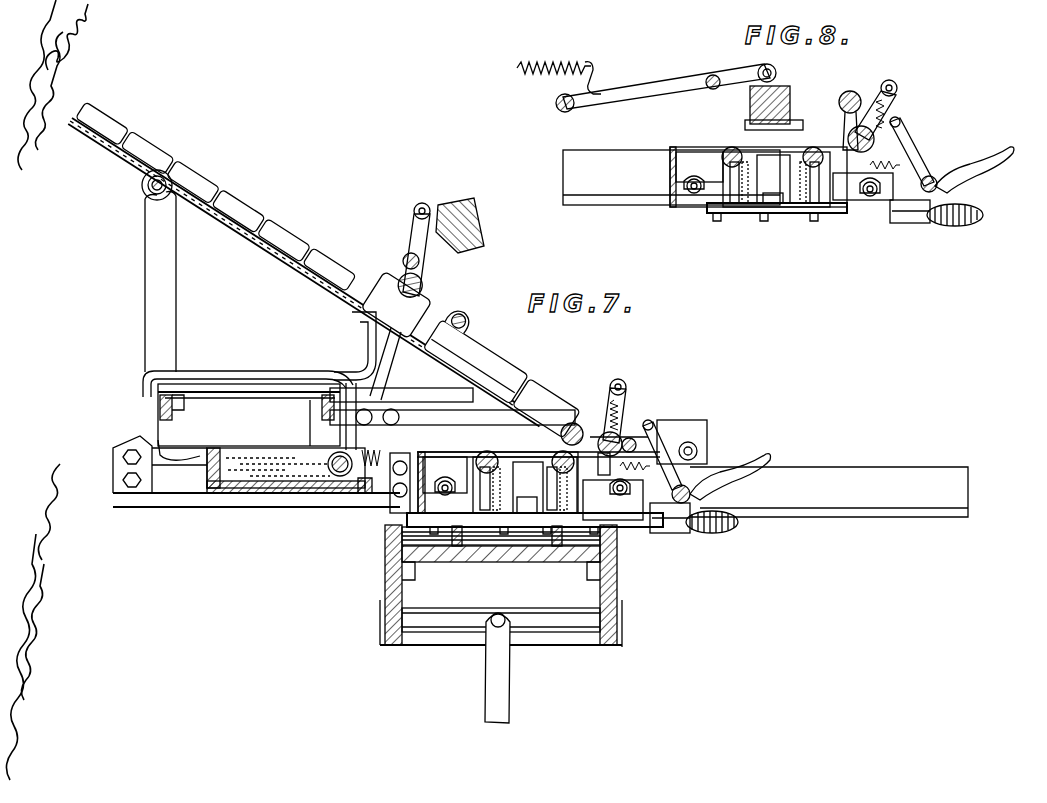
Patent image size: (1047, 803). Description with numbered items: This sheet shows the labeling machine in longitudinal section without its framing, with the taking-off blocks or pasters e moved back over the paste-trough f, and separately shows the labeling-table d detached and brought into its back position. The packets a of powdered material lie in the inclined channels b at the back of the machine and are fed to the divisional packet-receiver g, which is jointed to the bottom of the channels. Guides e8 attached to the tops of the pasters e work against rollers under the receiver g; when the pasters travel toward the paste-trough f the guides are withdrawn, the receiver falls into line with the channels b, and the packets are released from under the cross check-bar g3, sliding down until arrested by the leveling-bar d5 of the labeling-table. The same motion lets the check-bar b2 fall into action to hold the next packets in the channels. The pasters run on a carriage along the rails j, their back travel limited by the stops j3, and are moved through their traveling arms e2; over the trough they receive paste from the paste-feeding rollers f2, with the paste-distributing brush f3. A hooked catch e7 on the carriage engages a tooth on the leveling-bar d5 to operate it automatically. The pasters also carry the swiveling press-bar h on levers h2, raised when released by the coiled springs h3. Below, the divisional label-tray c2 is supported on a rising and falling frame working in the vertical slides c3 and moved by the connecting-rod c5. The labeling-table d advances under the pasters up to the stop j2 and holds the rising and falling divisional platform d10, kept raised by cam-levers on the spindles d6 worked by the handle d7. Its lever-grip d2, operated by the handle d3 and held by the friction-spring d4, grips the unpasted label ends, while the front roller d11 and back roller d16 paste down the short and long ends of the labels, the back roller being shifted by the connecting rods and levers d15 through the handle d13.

In FIG. 7, the packets a is at (560, 388).
In FIG. 7, the inclined channels b is at (232, 226).
In FIG. 7, the check-bar b2 is at (424, 284).
In FIG. 7, the divisional packet-receiver g is at (505, 376).
In FIG. 7, the cross check-bar g3 is at (462, 318).
In FIG. 7, the press-bar h is at (470, 236).
In FIG. 8, the press-bar h is at (777, 106).
In FIG. 8, the levers h2 is at (666, 86).
In FIG. 8, the coiled springs h3 is at (558, 64).
In FIG. 7, the taking-off blocks or pasters e is at (272, 408).
In FIG. 7, the traveling arms e2 is at (742, 424).
In FIG. 7, the hooked catch e7 is at (350, 384).
In FIG. 7, the guides e8 is at (258, 372).
In FIG. 7, the paste-trough f is at (284, 470).
In FIG. 7, the paste-feeding rollers f2 is at (332, 492).
In FIG. 7, the paste-distributing brush f3 is at (368, 492).
In FIG. 7, the rails j is at (829, 492).
In FIG. 8, the rails j is at (671, 177).
In FIG. 7, the stop j2 is at (400, 471).
In FIG. 7, the stops j3 is at (132, 456).
In FIG. 7, the labeling-table d is at (470, 448).
In FIG. 8, the labeling-table d is at (775, 172).
In FIG. 7, the lever-grip d2 is at (634, 437).
In FIG. 7, the handle d3 is at (625, 386).
In FIG. 8, the handle d3 is at (898, 85).
In FIG. 7, the friction-spring d4 is at (622, 408).
In FIG. 8, the friction-spring d4 is at (888, 112).
In FIG. 7, the leveling-bar d5 is at (576, 422).
In FIG. 8, the leveling-bar d5 is at (853, 98).
In FIG. 7, the spindles d6 is at (640, 522).
In FIG. 8, the spindles d6 is at (862, 214).
In FIG. 7, the handle d7 is at (723, 525).
In FIG. 8, the handle d7 is at (972, 213).
In FIG. 7, the rising and falling divisional platform d10 is at (512, 468).
In FIG. 8, the rising and falling divisional platform d10 is at (776, 167).
In FIG. 7, the front roller d11 is at (544, 482).
In FIG. 8, the front roller d11 is at (815, 146).
In FIG. 7, the handle d13 is at (772, 454).
In FIG. 8, the handle d13 is at (979, 170).
In FIG. 7, the connecting rods and levers d15 is at (662, 438).
In FIG. 8, the connecting rods and levers d15 is at (910, 142).
In FIG. 7, the back roller d16 is at (487, 452).
In FIG. 8, the back roller d16 is at (730, 147).
In FIG. 7, the divisional label-tray c2 is at (490, 556).
In FIG. 7, the vertical slides c3 is at (385, 592).
In FIG. 7, the connecting-rod c5 is at (509, 668).